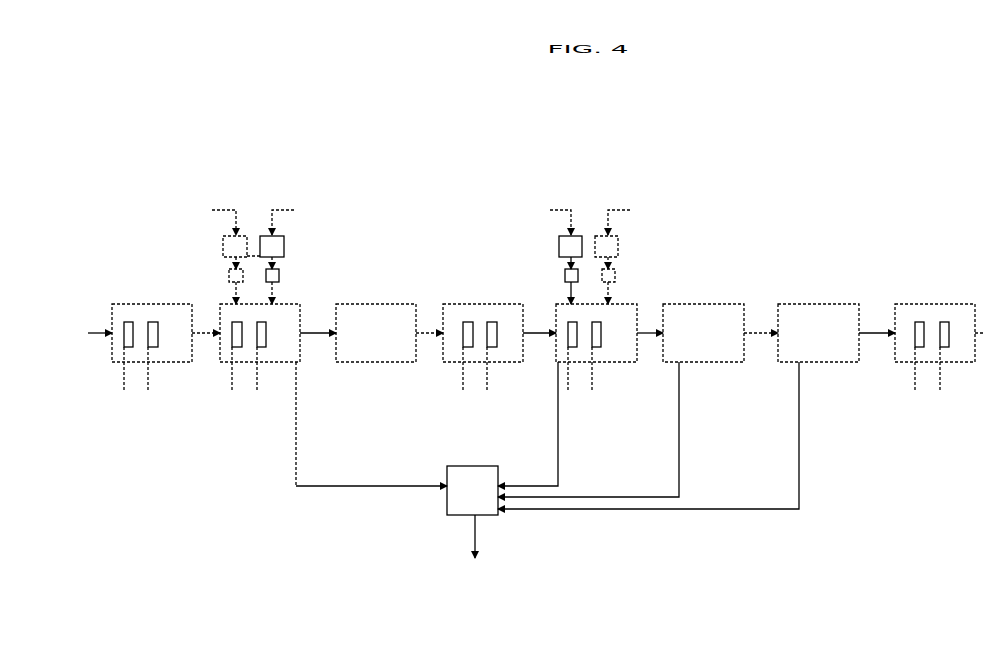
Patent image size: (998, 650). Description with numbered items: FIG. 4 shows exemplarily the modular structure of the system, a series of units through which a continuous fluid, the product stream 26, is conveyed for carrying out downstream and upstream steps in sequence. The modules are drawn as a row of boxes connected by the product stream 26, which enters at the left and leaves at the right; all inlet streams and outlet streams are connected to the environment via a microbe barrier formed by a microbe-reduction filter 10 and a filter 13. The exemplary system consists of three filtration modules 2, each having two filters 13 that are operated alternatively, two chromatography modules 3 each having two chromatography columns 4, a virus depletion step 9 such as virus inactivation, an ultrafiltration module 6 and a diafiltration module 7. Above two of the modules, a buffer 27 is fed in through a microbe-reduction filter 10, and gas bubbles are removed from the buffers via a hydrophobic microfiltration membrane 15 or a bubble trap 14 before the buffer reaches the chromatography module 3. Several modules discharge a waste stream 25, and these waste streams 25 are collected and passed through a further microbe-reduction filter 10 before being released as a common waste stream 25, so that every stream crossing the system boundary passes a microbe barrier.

The filtration module 2 is at (173, 362).
The chromatography module 3 is at (280, 362).
The chromatography column 4 is at (416, 360).
The ultrafiltration module 6 is at (724, 362).
The diafiltration module 7 is at (838, 362).
The virus depletion 9 is at (384, 362).
The microbe-reduction filter 10 is at (638, 246).
The filter 13 is at (706, 360).
The bubble trap 14 is at (279, 270).
The hydrophobic microfiltration membrane 15 is at (229, 270).
The waste stream 25 is at (296, 463).
The product stream 26 is at (88, 333).
The buffer 27 is at (422, 219).